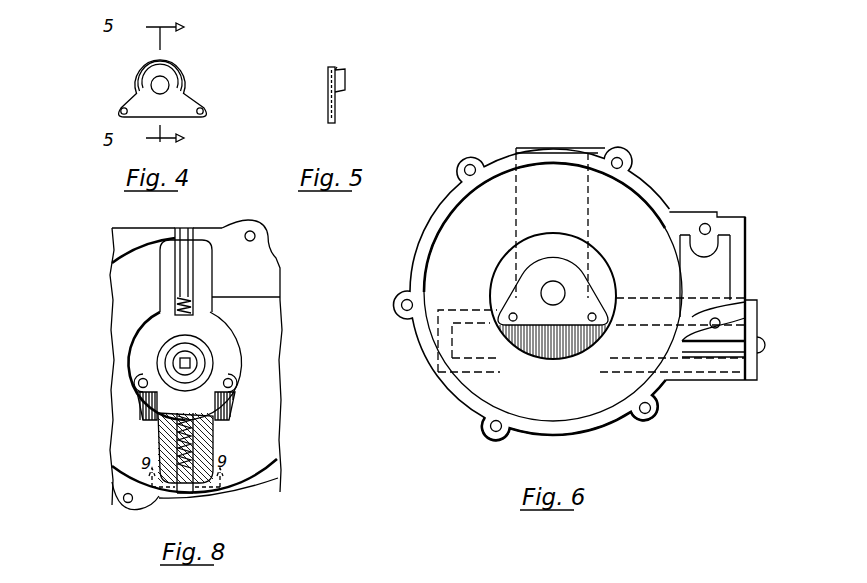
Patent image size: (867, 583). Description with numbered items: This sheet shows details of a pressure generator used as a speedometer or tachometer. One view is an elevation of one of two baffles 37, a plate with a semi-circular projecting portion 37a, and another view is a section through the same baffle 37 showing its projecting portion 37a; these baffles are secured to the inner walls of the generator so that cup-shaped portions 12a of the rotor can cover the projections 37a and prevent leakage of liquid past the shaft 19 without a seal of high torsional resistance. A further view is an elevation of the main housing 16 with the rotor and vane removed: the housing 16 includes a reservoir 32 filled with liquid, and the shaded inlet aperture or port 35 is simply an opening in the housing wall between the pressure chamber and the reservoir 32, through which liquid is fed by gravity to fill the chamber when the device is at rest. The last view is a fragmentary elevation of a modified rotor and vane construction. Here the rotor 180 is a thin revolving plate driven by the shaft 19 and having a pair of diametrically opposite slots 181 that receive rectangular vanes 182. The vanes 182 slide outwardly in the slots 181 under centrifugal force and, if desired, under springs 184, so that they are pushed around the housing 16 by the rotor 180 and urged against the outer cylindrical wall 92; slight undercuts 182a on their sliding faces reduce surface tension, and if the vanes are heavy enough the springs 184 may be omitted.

In FIG. 8, the housing 16 is at (279, 418).
In FIG. 6, the housing 16 is at (447, 200).
In FIG. 6, the reservoir 32 is at (710, 381).
In FIG. 8, the inlet aperture or port 35 is at (230, 410).
In FIG. 6, the inlet aperture or port 35 is at (522, 342).
In FIG. 4, the baffle 37 is at (205, 103).
In FIG. 5, the baffle 37 is at (336, 109).
In FIG. 4, the semi-circular projecting portion 37a is at (178, 74).
In FIG. 5, the semi-circular projecting portion 37a is at (344, 68).
In FIG. 8, the cylindrical wall 92 is at (281, 268).
In FIG. 8, the rotor 180 is at (281, 297).
In FIG. 8, the slot 181 is at (160, 302).
In FIG. 8, the vane 182 is at (257, 232).
In FIG. 8, the undercut 182a is at (184, 245).
In FIG. 8, the spring 184 is at (175, 305).
In FIG. 8, the cup-shaped portion 12a is at (210, 344).
In FIG. 8, the shaft 19 is at (191, 363).